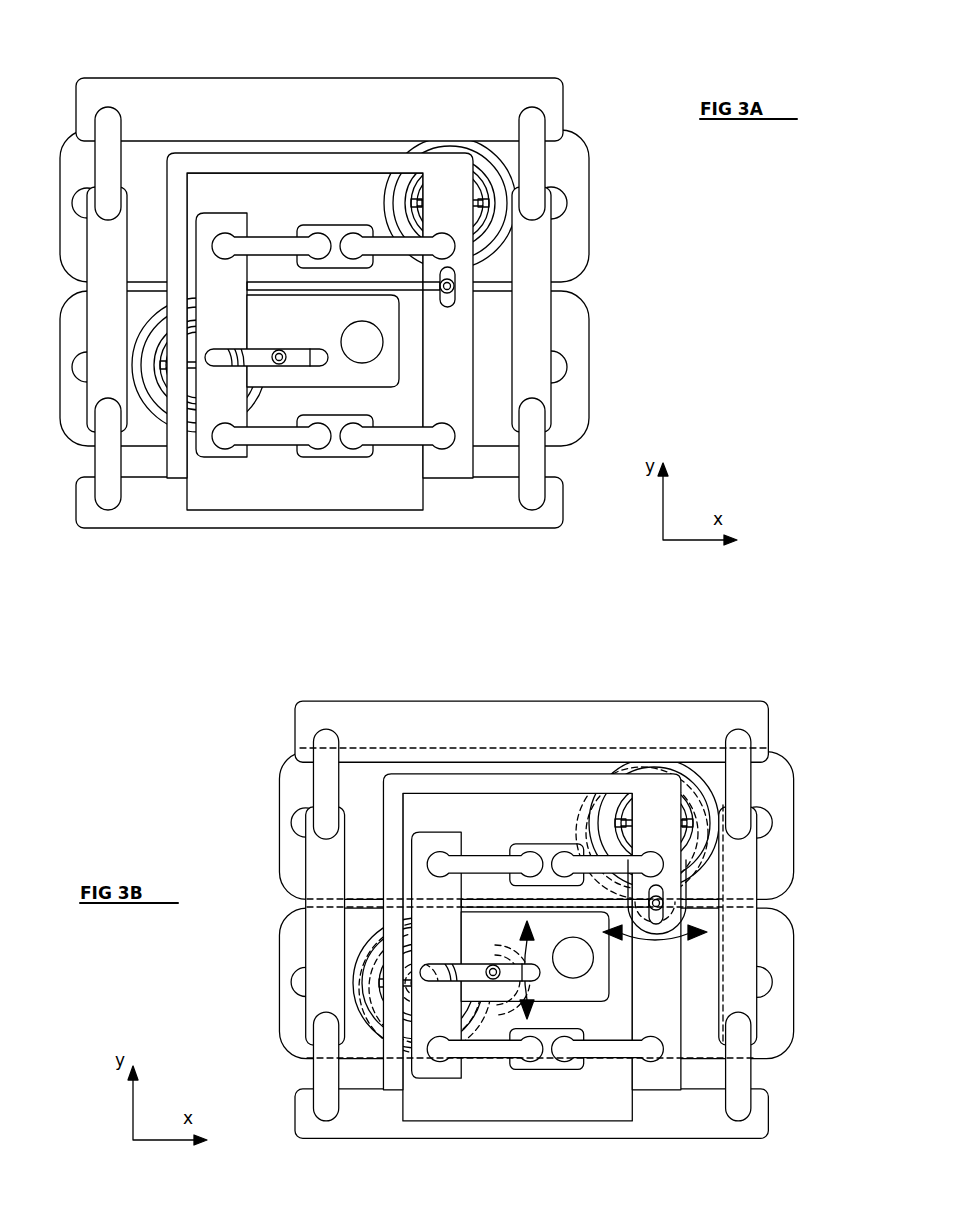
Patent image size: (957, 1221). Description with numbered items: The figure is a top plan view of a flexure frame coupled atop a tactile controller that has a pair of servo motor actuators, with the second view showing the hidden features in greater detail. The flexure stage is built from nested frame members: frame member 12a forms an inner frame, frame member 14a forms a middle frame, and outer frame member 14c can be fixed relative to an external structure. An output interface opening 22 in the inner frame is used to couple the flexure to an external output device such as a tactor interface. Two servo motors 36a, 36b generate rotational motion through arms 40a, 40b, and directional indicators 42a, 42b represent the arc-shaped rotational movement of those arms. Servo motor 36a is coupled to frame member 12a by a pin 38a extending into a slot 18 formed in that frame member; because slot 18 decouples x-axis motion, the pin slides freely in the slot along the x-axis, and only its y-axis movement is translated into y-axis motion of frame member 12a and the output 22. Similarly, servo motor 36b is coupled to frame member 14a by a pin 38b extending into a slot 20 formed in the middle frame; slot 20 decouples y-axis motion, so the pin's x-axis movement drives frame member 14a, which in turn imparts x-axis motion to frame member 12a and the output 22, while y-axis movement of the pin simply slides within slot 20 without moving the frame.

In FIG. 3A, the inner frame member 12a is at (207, 455).
In FIG. 3A, the middle frame member 14a is at (140, 515).
In FIG. 3A, the outer frame member 14c is at (390, 95).
In FIG. 3A, the slot 18 is at (318, 362).
In FIG. 3A, the slot 20 is at (362, 342).
In FIG. 3A, the output interface opening 22 is at (450, 300).
In FIG. 3A, the servo motor 36a is at (589, 355).
In FIG. 3A, the servo motor 36b is at (589, 165).
In FIG. 3A, the pin 38a is at (279, 364).
In FIG. 3A, the pin 38b is at (454, 284).
In FIG. 3A, the arm 40a is at (297, 362).
In FIG. 3B, the arm 40a is at (498, 990).
In FIG. 3A, the arm 40b is at (462, 279).
In FIG. 3B, the arm 40b is at (665, 896).
In FIG. 3B, the directional indicator 42a is at (528, 985).
In FIG. 3B, the directional indicator 42b is at (652, 942).